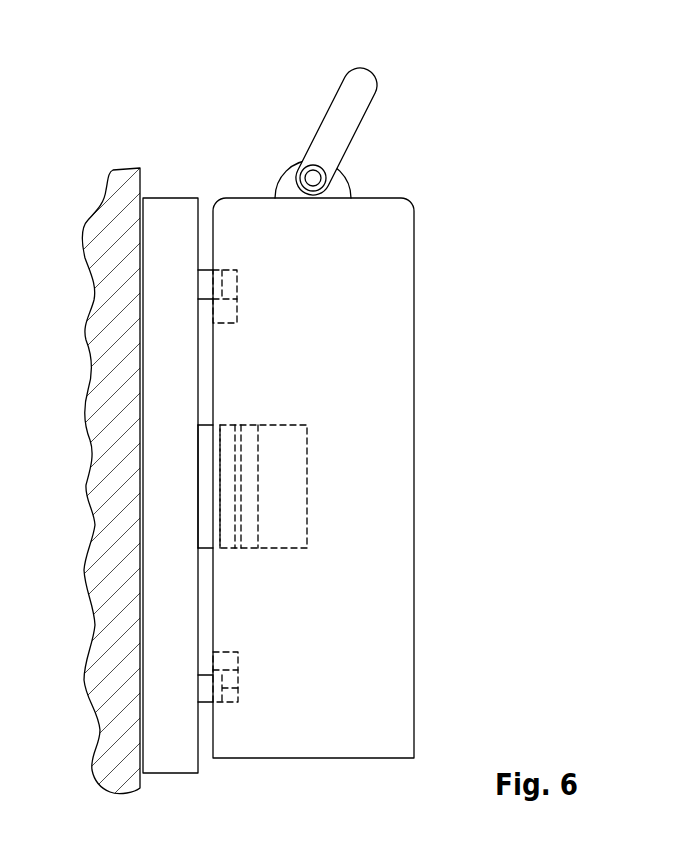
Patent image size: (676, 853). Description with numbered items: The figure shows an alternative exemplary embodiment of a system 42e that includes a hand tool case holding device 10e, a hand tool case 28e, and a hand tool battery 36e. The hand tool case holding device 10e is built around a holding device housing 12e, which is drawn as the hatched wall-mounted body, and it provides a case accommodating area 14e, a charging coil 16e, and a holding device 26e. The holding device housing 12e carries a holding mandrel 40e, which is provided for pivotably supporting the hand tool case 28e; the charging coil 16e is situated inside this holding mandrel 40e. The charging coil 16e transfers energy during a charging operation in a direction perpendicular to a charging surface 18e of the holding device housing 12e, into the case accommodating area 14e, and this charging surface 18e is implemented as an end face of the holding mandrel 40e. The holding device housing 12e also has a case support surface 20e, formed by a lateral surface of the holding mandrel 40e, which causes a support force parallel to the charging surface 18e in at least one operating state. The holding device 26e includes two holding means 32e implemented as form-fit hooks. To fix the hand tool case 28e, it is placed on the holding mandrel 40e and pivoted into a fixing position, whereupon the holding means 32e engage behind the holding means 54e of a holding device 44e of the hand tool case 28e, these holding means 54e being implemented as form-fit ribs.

The hand tool case holding device 10e is at (170, 172).
The holding device housing 12e is at (163, 248).
The case accommodating area 14e is at (317, 99).
The charging coil 16e is at (228, 472).
The charging surface 18e is at (243, 457).
The case support surface 20e is at (233, 419).
The holding device 26e is at (255, 293).
The hand tool case 28e is at (397, 221).
The holding means 32e is at (238, 690).
The hand tool battery 36e is at (292, 485).
The holding mandrel 40e is at (186, 503).
The system 42e is at (427, 94).
The holding device 44e is at (253, 660).
The holding means 54e is at (238, 671).